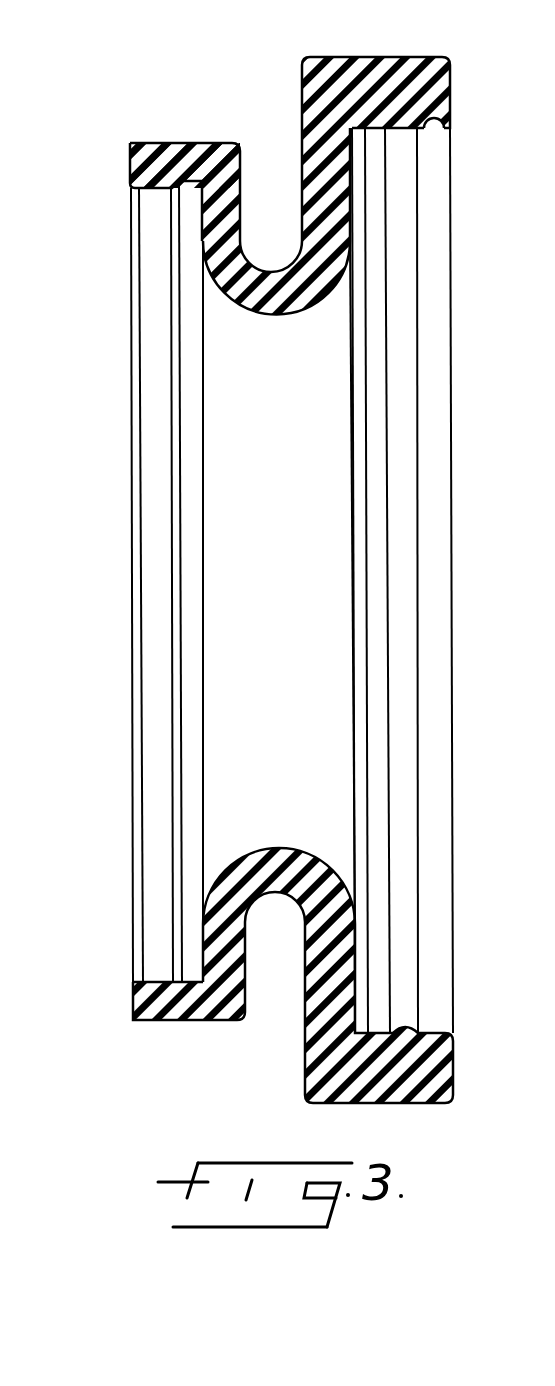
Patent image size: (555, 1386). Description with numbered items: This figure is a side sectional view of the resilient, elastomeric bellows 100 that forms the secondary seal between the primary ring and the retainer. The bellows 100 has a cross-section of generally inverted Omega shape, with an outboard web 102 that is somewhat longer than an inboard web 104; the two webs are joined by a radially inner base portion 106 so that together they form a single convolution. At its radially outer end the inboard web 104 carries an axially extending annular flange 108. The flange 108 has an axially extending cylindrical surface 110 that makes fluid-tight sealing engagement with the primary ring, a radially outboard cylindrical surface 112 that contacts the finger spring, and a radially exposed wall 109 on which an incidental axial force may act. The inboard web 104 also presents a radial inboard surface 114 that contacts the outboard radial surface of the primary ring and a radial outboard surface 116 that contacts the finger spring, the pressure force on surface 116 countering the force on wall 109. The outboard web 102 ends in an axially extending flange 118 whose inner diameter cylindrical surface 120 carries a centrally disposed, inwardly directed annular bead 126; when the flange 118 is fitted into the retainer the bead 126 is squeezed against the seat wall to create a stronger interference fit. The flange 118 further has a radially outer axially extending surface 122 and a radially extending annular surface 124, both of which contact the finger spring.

The bellows 100 is at (457, 557).
The outboard web 102 is at (334, 194).
The inboard web 104 is at (217, 230).
The radially inner base portion 106 is at (272, 300).
The annular flange 108 is at (167, 157).
The radially exposed wall 109 is at (128, 164).
The axially extending cylindrical surface 110 is at (157, 188).
The radially outboard cylindrical surface 112 is at (214, 103).
The radial inboard surface 114 is at (210, 931).
The radial outboard surface 116 is at (250, 983).
The axially extending flange 118 is at (446, 80).
The inner diameter cylindrical surface 120 is at (431, 126).
The radially outer axially extending surface 122 is at (364, 57).
The radially extending annular surface 124 is at (302, 84).
The annular bead 126 is at (398, 133).